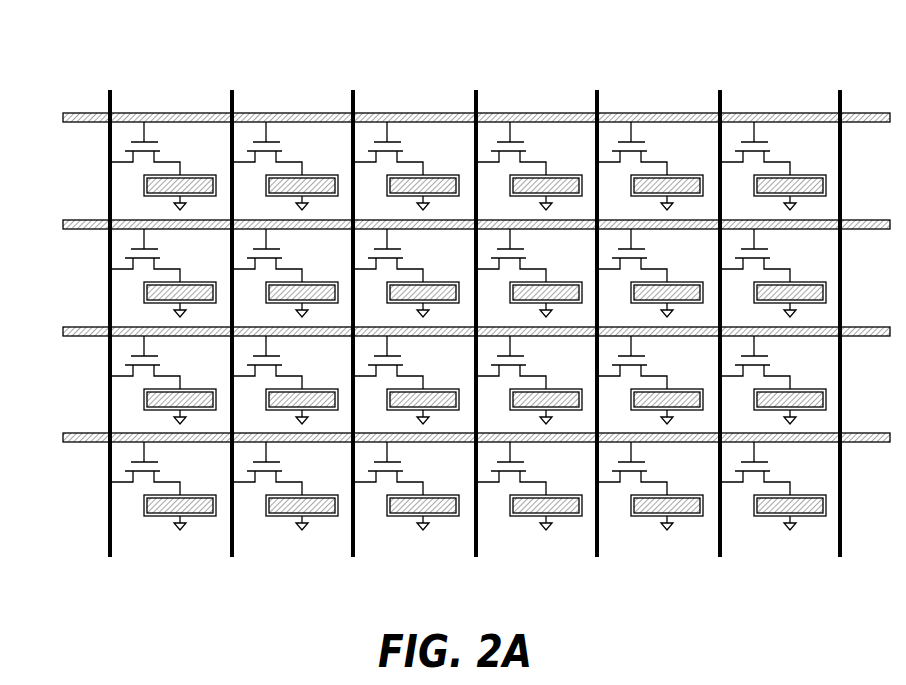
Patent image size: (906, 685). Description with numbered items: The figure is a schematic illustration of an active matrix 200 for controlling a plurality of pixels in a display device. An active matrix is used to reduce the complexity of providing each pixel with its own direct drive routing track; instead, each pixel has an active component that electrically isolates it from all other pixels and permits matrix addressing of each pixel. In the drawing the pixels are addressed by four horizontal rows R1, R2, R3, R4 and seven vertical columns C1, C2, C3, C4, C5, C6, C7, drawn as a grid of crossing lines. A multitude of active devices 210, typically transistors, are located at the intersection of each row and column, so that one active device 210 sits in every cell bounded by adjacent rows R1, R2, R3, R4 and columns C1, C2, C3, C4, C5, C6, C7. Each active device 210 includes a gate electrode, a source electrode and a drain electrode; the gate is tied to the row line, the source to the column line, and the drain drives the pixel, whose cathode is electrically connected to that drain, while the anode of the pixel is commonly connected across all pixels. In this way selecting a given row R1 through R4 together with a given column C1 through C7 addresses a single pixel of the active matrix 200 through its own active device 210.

The active matrix 200 is at (170, 619).
The active device 210 is at (797, 153).
The row R1 is at (455, 115).
The row R2 is at (455, 222).
The row R3 is at (455, 329).
The row R4 is at (455, 435).
The column C1 is at (110, 302).
The column C2 is at (232, 302).
The column C3 is at (353, 302).
The column C4 is at (476, 302).
The column C5 is at (597, 302).
The column C6 is at (720, 302).
The column C7 is at (840, 302).